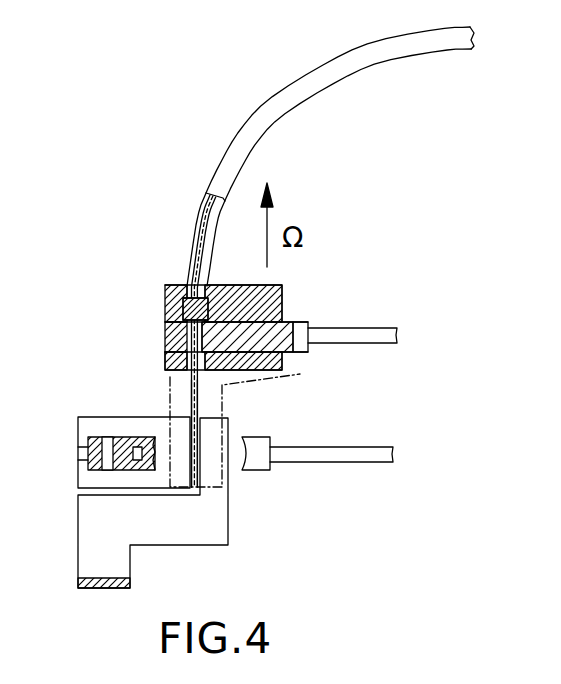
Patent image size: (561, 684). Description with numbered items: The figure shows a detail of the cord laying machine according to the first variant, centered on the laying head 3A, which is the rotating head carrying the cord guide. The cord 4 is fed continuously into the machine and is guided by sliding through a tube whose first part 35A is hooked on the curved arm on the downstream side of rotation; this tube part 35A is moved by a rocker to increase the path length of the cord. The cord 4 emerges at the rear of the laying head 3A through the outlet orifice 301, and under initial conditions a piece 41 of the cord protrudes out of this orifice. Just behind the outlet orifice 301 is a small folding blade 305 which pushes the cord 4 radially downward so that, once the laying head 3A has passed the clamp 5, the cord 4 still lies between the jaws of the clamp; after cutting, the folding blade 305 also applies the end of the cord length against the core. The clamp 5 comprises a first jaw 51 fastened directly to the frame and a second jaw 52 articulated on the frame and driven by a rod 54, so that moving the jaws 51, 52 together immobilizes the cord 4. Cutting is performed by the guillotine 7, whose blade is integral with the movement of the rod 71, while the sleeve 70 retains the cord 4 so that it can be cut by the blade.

The tube part 35A is at (403, 48).
The cord 4 is at (198, 217).
The sleeve 70 is at (188, 308).
The guillotine 7 is at (172, 325).
The outlet orifice 301 is at (175, 371).
The piece of cord 41 is at (191, 393).
The clamp 5 is at (191, 493).
The folding blade 305 is at (287, 373).
The rod 71 is at (378, 328).
The rod 54 is at (363, 462).
The second jaw 52 is at (87, 482).
The first jaw 51 is at (227, 502).
The laying head 3A is at (230, 299).